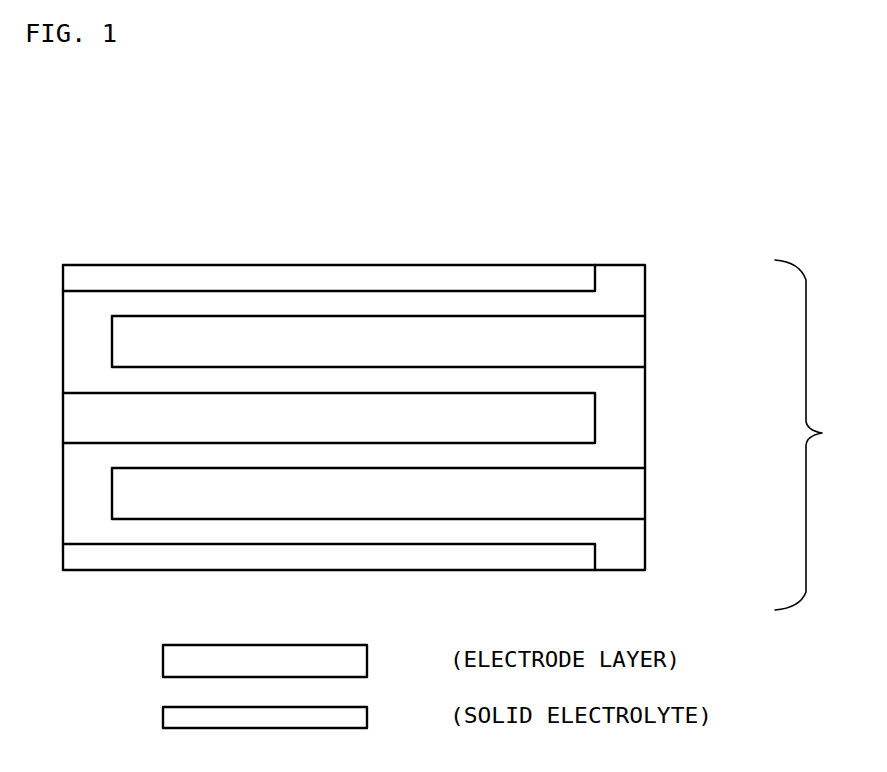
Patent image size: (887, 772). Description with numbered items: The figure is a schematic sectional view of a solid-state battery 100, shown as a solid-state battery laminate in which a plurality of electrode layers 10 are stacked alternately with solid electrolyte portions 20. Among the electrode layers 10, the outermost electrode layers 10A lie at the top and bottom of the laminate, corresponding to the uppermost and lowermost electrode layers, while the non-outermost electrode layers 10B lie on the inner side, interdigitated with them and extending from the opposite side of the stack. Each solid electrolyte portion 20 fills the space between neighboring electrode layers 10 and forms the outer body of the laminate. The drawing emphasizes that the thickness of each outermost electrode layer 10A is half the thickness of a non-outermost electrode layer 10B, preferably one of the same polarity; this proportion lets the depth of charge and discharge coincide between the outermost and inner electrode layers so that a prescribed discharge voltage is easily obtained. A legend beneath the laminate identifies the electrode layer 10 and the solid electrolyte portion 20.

The solid-state battery 100 is at (143, 215).
The electrode layer 10 is at (355, 661).
The outermost electrode layer 10A is at (577, 282).
The non-outermost electrode layer 10B is at (577, 418).
The solid electrolyte portion 20 is at (408, 718).